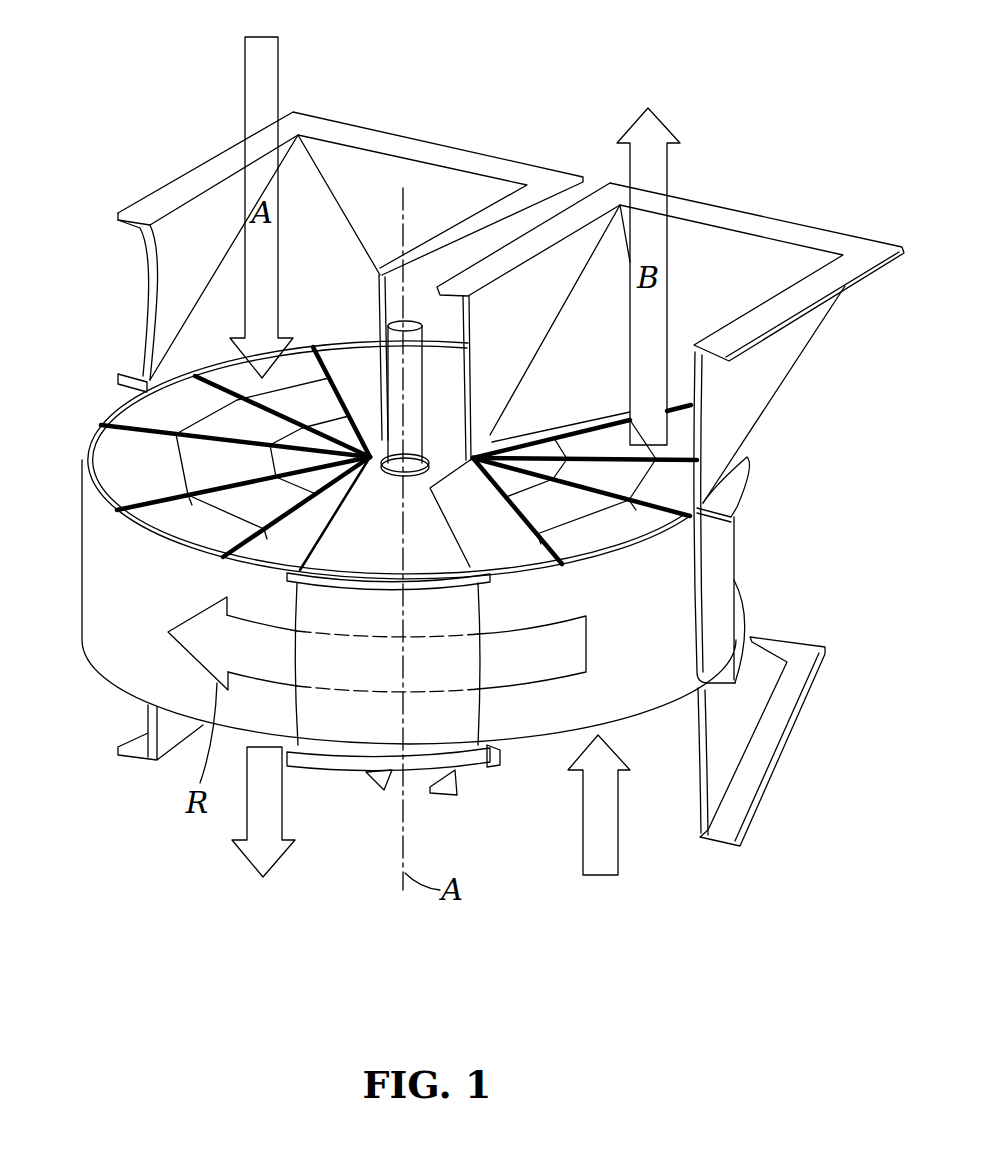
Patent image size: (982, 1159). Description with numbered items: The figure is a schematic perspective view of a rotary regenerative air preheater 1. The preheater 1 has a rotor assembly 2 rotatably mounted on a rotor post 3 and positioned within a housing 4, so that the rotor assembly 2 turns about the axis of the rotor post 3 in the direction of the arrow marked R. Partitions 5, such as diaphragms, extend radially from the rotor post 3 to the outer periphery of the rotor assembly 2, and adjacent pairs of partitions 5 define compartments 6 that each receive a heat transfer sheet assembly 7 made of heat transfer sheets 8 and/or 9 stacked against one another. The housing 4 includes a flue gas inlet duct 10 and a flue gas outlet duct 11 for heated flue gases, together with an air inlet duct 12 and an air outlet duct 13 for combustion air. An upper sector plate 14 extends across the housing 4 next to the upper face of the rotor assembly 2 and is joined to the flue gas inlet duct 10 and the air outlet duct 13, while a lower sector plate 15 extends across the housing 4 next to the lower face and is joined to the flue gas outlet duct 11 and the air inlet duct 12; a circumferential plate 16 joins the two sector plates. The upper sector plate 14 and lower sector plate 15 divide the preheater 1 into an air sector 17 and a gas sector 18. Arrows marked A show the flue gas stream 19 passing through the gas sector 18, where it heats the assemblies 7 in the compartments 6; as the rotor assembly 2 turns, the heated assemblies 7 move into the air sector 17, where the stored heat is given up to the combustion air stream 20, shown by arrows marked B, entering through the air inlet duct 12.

The rotary regenerative air preheater 1 is at (788, 87).
The rotor assembly 2 is at (677, 557).
The rotor post 3 is at (418, 322).
The housing 4 is at (715, 585).
The partitions 5 is at (152, 495).
The compartments 6 is at (617, 532).
The heat transfer sheet assembly 7 is at (137, 372).
The heat transfer sheets 8 is at (200, 413).
The heat transfer sheets 9 is at (183, 425).
The flue gas inlet duct 10 is at (192, 170).
The flue gas outlet duct 11 is at (140, 763).
The air inlet duct 12 is at (783, 753).
The air outlet duct 13 is at (883, 270).
The upper sector plate 14 is at (378, 556).
The lower sector plate 15 is at (490, 763).
The circumferential plate 16 is at (440, 737).
The air sector 17 is at (767, 260).
The gas sector 18 is at (360, 178).
The flue gas stream 19 is at (280, 863).
The combustion air stream 20 is at (600, 877).